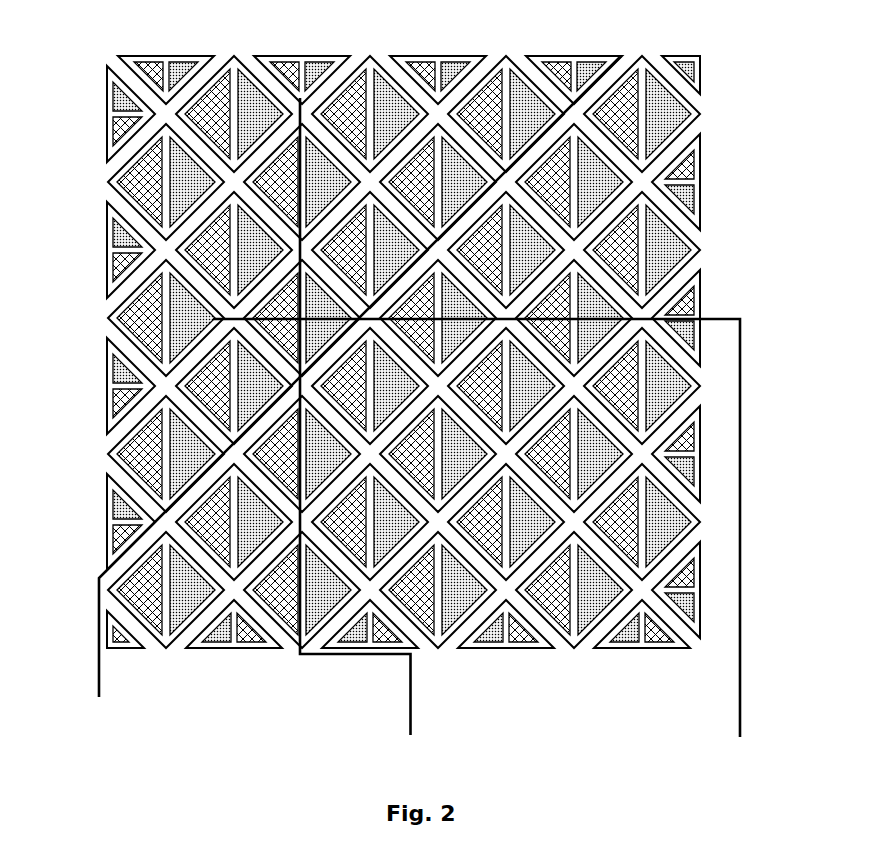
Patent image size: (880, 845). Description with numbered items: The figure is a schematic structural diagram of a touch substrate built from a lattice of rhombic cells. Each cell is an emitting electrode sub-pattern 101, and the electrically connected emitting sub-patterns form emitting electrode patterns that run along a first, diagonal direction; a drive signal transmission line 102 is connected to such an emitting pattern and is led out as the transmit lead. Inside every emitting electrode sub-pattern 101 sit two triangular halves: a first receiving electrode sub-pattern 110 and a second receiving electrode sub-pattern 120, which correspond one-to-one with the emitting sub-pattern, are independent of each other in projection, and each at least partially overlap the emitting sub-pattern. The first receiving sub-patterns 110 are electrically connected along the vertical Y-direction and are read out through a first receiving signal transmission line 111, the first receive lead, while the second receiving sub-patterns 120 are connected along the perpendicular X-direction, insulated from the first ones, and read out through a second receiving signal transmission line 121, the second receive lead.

The emitting electrode sub-pattern 101 is at (454, 55).
The first receiving electrode sub-pattern 110 is at (559, 64).
The second receiving electrode sub-pattern 120 is at (597, 62).
The drive signal transmission line 102 is at (95, 673).
The first receiving signal transmission line 111 is at (415, 712).
The second receiving signal transmission line 121 is at (745, 704).